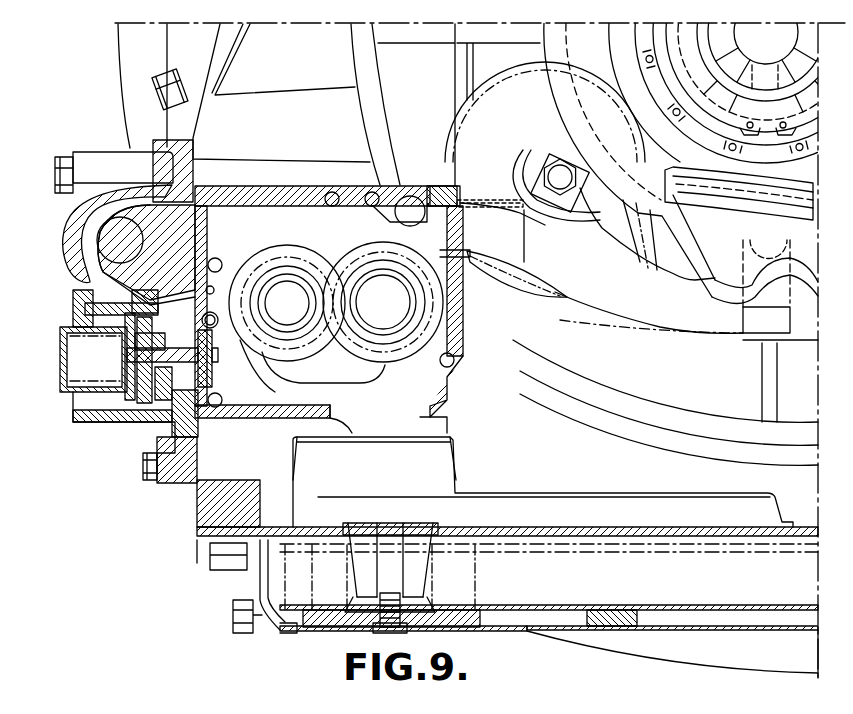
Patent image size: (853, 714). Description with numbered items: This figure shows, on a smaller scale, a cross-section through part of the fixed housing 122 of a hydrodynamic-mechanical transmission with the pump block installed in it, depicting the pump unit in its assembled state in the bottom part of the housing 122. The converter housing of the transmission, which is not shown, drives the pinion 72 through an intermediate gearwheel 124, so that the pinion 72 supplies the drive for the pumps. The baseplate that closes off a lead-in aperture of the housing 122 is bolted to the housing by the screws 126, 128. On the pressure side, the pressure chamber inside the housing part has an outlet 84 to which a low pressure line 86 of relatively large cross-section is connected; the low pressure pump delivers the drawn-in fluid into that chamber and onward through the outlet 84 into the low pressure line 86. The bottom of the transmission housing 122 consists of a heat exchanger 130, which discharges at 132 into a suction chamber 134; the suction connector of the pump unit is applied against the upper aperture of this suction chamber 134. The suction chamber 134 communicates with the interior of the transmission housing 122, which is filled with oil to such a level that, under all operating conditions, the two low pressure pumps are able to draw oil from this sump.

The pinion 72 is at (510, 300).
The outlet 84 is at (440, 184).
The low pressure line 86 is at (660, 312).
The housing 122 is at (197, 510).
The intermediate gearwheel 124 is at (477, 138).
The screw 126 is at (56, 186).
The screw 128 is at (143, 462).
The heat exchanger 130 is at (470, 615).
The discharge 132 is at (352, 528).
The suction chamber 134 is at (390, 477).